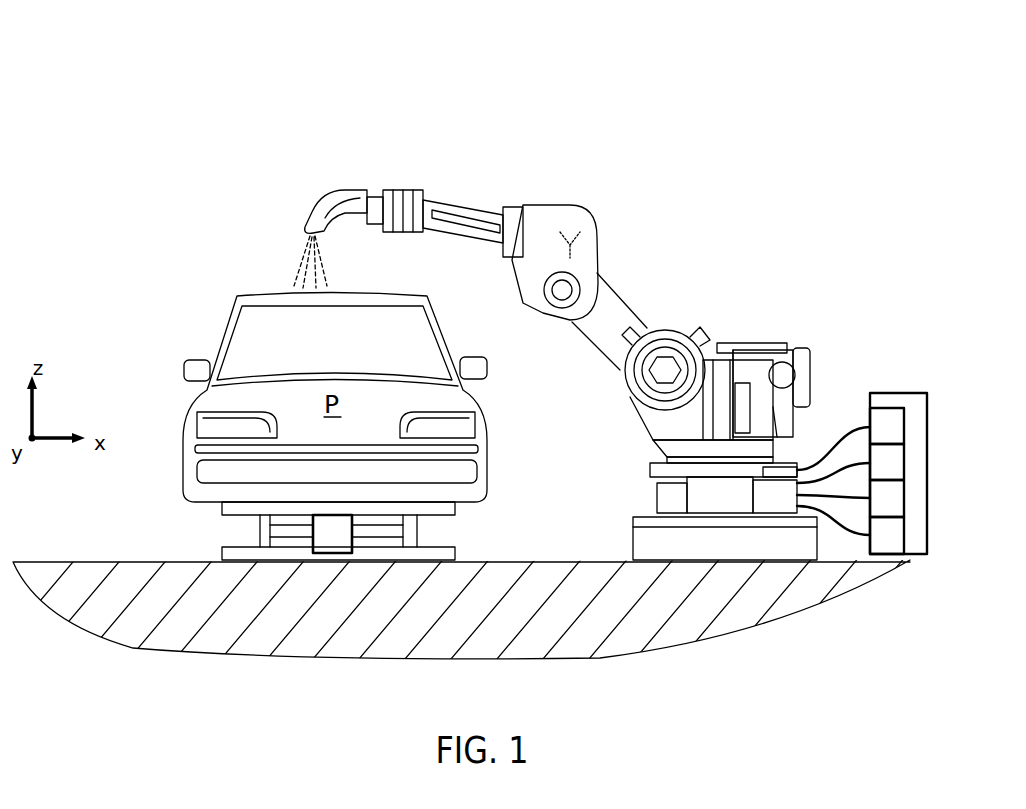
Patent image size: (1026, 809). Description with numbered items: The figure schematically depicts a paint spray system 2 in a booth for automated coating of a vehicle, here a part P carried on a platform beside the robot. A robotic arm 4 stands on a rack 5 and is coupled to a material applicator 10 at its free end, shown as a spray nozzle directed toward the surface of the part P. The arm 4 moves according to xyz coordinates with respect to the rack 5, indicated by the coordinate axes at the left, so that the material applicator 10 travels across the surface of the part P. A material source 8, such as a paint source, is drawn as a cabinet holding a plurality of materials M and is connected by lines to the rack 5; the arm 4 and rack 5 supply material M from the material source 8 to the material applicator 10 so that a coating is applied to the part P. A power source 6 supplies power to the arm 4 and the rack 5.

The paint spray system 2 is at (300, 124).
The material applicator 10 is at (313, 205).
The robotic arm 4 is at (587, 233).
The power source 6 is at (743, 370).
The rack 5 is at (778, 440).
The material source 8 is at (907, 393).